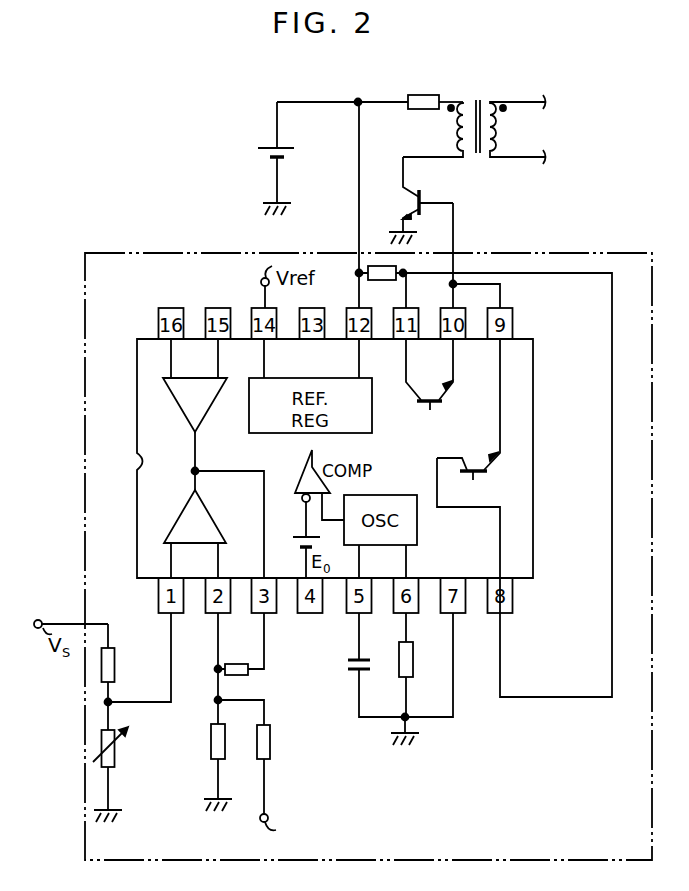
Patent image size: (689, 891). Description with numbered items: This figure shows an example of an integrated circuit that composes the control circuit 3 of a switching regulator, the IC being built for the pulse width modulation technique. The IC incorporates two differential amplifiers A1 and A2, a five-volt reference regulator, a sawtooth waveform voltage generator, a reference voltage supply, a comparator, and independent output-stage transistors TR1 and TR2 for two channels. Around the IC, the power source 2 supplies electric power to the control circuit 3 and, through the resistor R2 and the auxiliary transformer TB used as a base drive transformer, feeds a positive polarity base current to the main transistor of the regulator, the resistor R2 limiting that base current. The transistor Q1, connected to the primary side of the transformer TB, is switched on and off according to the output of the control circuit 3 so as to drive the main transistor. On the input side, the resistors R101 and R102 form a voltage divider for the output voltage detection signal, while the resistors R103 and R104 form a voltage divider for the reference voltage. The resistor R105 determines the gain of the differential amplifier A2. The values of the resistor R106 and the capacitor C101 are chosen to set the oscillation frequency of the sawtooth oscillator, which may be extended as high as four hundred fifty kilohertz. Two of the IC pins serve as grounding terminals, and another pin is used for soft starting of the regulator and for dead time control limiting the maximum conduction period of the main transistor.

The power source 2 is at (260, 150).
The control circuit 3 is at (84, 292).
The resistor R2 is at (418, 95).
The auxiliary transformer TB is at (478, 97).
The transistor Q1 is at (405, 200).
The output-stage transistor TR1 is at (472, 455).
The output-stage transistor TR2 is at (446, 384).
The differential amplifier A1 is at (195, 414).
The differential amplifier A2 is at (214, 523).
The resistor for voltage division R101 is at (115, 668).
The resistor for voltage division R102 is at (115, 752).
The resistor of voltage divider R103 is at (270, 746).
The resistor of voltage divider R104 is at (211, 741).
The resistor R105 is at (258, 650).
The resistor R106 is at (413, 668).
The capacitor C101 is at (347, 666).